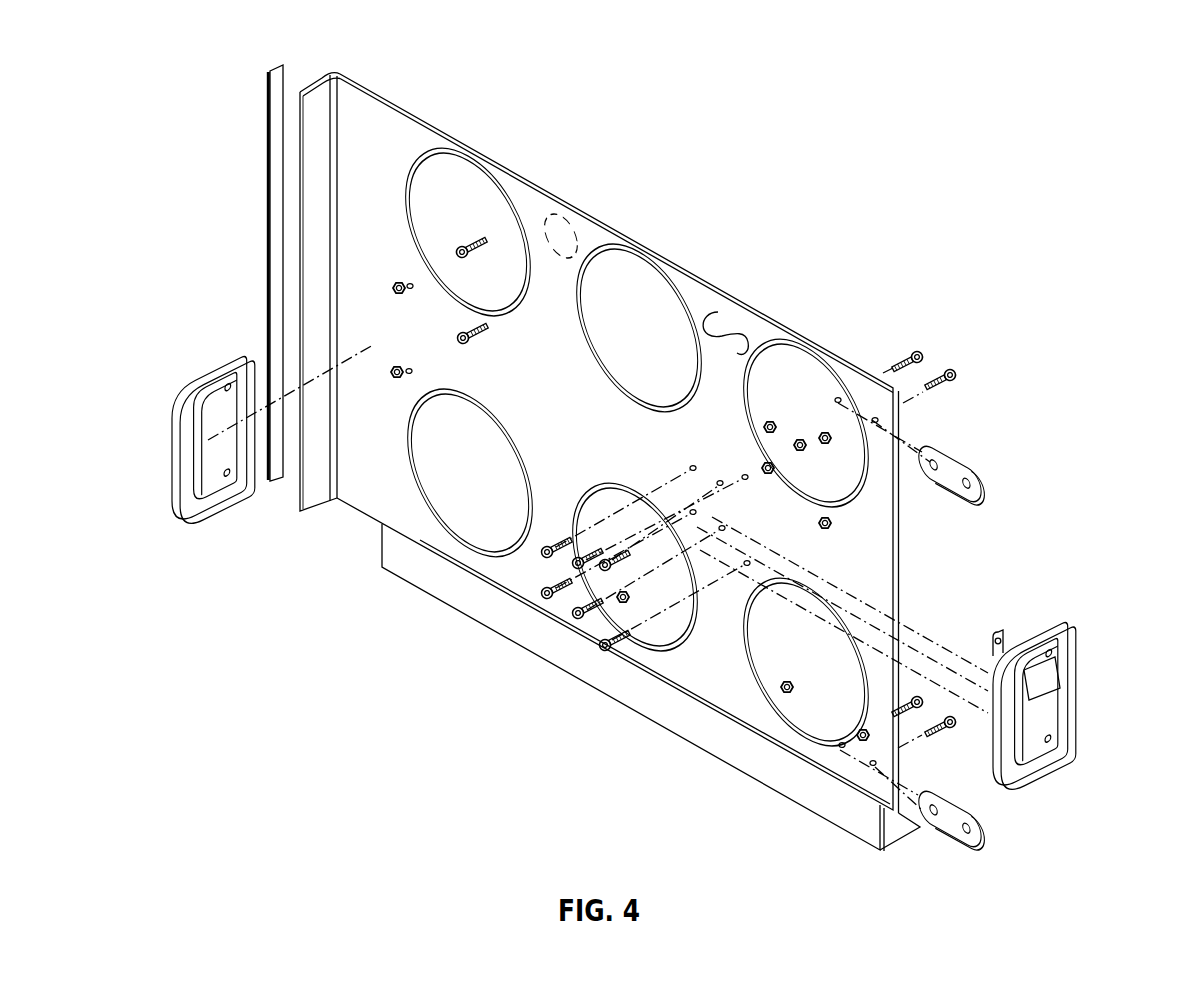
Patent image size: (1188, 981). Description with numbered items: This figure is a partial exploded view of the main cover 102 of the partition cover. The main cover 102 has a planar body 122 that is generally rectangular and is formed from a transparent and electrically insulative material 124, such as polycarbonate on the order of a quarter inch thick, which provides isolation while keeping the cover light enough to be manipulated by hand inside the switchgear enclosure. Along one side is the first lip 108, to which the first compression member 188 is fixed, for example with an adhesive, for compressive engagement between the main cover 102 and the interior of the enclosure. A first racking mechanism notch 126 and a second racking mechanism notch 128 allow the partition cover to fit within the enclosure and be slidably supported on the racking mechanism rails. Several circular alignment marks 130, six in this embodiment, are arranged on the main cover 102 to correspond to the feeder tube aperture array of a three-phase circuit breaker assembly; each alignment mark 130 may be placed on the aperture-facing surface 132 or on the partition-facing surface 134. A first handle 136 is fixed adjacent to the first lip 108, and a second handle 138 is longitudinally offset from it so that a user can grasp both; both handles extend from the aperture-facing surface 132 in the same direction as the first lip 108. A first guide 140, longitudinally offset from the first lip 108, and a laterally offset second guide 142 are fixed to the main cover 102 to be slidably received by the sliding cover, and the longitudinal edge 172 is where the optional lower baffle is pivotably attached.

The main cover 102 is at (598, 451).
The first lip 108 is at (318, 97).
The planar body 122 is at (381, 490).
The transparent and electrically insulative material 124 is at (376, 124).
The first racking mechanism notch 126 is at (344, 521).
The second racking mechanism notch 128 is at (898, 841).
The alignment mark 130 is at (477, 130).
The aperture-facing surface 132 is at (572, 237).
The partition-facing surface 134 is at (741, 331).
The first handle 136 is at (214, 373).
The second handle 138 is at (1061, 690).
The first guide 140 is at (953, 455).
The second guide 142 is at (986, 837).
The longitudinal edge 172 is at (451, 608).
The first compression member 188 is at (279, 120).